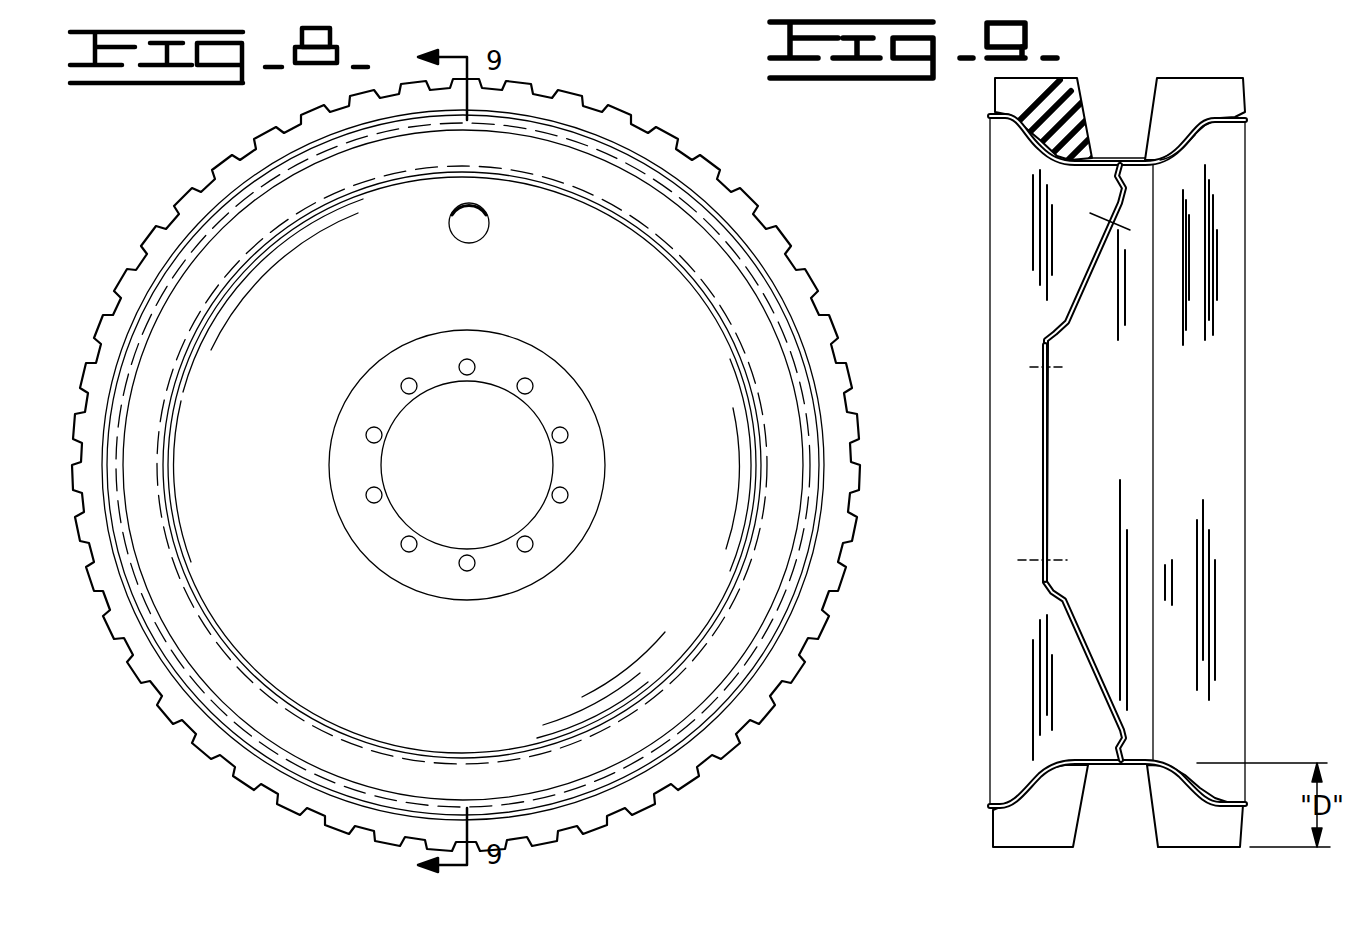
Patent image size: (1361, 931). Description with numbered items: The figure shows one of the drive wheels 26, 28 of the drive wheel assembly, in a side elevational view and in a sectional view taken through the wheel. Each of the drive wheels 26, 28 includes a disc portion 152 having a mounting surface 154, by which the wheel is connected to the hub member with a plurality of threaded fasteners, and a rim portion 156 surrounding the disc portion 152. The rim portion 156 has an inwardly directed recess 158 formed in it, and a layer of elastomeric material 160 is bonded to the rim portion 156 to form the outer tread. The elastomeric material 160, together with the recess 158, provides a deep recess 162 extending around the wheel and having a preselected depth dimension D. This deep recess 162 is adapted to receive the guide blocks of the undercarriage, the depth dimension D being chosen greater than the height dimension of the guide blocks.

In FIG. 8, the drive wheel 26 is at (466, 441).
In FIG. 9, the drive wheel 26 is at (1128, 439).
In FIG. 8, the drive wheel 28 is at (466, 441).
In FIG. 9, the drive wheel 28 is at (1128, 439).
In FIG. 8, the disc portion 152 is at (461, 681).
In FIG. 9, the disc portion 152 is at (1080, 285).
In FIG. 8, the mounting surface 154 is at (388, 374).
In FIG. 9, the mounting surface 154 is at (1043, 345).
In FIG. 9, the rim portion 156 is at (1237, 125).
In FIG. 9, the inwardly directed recess 158 is at (1195, 143).
In FIG. 8, the layer of elastomeric material 160 is at (683, 792).
In FIG. 9, the layer of elastomeric material 160 is at (993, 108).
In FIG. 9, the deep recess 162 is at (1112, 130).